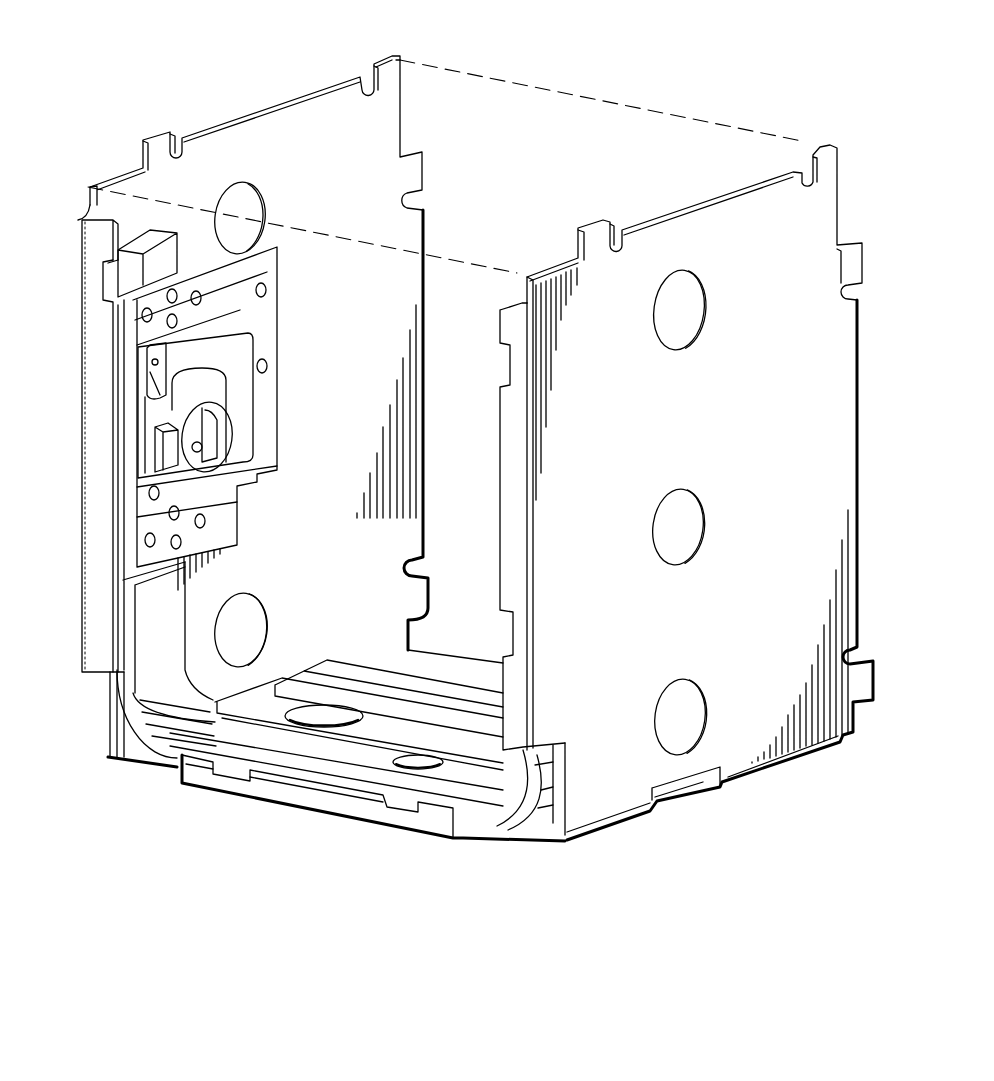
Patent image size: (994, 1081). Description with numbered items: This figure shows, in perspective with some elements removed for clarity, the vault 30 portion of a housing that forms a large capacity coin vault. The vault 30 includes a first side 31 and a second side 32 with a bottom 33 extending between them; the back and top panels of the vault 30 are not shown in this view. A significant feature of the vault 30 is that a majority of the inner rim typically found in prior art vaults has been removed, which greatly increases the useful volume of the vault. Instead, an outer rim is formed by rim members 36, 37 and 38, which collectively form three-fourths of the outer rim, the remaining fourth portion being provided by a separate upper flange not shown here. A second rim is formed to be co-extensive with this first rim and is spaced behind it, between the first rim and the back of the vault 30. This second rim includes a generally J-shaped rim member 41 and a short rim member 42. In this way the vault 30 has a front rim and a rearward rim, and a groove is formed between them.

The vault 30 is at (601, 94).
The first side 31 is at (693, 425).
The second side 32 is at (358, 337).
The bottom 33 is at (393, 727).
The rim member 36 is at (520, 534).
The rim member 37 is at (283, 787).
The rim member 38 is at (120, 636).
The J-shaped rim member 41 is at (503, 813).
The short rim member 42 is at (163, 262).